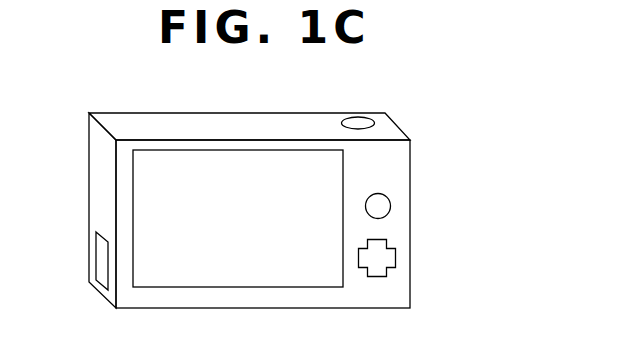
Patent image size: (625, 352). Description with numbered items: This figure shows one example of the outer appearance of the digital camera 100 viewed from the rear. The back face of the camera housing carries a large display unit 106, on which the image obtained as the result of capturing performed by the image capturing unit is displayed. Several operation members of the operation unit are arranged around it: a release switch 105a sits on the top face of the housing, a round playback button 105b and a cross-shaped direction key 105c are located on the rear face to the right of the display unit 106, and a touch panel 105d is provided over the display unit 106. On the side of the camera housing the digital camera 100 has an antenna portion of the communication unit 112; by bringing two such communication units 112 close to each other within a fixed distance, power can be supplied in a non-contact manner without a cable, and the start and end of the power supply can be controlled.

The digital camera 100 is at (282, 113).
The display unit 106 is at (333, 177).
The release switch 105a is at (358, 119).
The playback button 105b is at (391, 205).
The direction key 105c is at (396, 257).
The touch panel 105d is at (188, 150).
The communication unit 112 is at (98, 250).